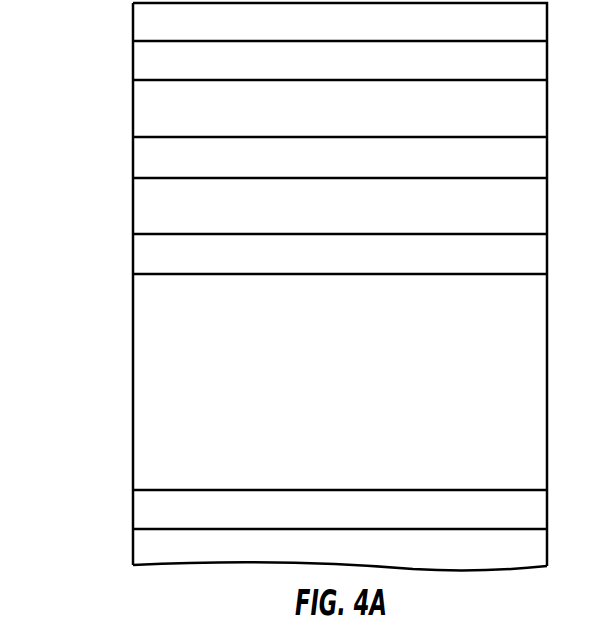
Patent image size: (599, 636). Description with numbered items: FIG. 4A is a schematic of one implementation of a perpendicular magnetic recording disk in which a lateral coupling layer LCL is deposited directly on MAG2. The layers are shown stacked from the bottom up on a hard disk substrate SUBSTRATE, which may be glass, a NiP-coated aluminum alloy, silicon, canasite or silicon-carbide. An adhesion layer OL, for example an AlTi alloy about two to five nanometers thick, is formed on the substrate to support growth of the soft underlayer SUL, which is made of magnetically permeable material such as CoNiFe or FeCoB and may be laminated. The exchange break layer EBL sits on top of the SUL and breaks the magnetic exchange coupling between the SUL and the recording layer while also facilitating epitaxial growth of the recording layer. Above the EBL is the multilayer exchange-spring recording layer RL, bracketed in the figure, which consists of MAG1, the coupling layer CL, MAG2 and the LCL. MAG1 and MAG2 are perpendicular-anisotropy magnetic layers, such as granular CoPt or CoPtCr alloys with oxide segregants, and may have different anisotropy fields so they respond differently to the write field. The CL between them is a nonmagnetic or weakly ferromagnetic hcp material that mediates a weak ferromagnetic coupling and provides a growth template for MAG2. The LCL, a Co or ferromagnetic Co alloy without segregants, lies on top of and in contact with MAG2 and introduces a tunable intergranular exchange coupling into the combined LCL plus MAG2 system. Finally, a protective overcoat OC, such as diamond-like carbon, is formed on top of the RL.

The overcoat OC is at (340, 22).
The lateral coupling layer LCL is at (340, 60).
The MAG2 layer MAG2 is at (340, 108).
The coupling layer CL is at (340, 157).
The MAG1 layer MAG1 is at (340, 206).
The exchange break layer EBL is at (340, 254).
The soft underlayer SUL is at (340, 382).
The adhesion layer OL is at (340, 509).
The hard disk substrate SUBSTRATE is at (340, 547).
The recording layer RL is at (112, 43).